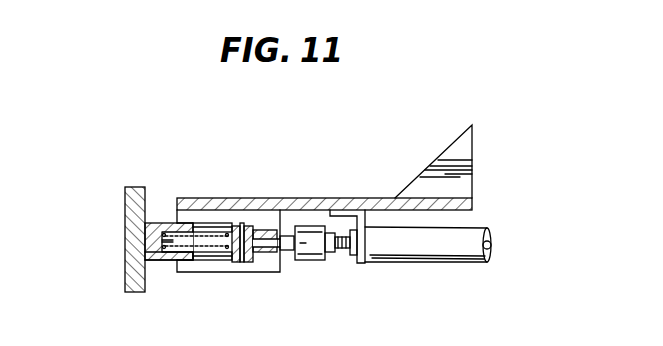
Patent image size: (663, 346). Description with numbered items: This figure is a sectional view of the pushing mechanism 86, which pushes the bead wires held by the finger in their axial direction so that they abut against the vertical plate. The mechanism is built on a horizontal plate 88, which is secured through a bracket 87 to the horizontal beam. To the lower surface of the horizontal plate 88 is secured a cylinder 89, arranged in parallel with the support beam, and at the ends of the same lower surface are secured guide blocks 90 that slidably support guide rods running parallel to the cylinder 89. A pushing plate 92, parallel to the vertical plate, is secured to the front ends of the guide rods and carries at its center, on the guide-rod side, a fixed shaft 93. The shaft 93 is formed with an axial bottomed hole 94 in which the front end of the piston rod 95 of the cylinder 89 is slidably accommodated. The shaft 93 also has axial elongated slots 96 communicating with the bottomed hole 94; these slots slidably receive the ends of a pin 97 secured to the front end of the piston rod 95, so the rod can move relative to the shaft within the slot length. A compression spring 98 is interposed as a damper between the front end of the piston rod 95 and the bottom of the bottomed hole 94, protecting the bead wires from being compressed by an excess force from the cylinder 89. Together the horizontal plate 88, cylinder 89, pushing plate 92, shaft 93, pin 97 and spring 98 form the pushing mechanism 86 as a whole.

The pushing mechanism 86 is at (310, 197).
The bracket 87 is at (443, 158).
The horizontal plate 88 is at (279, 198).
The cylinder 89 is at (435, 254).
The guide block 90 is at (231, 216).
The pushing plate 92 is at (125, 244).
The shaft 93 is at (160, 222).
The bottomed hole 94 is at (172, 248).
The piston rod 95 is at (285, 252).
The elongated slot 96 is at (200, 231).
The pin 97 is at (226, 259).
The compression spring 98 is at (200, 244).